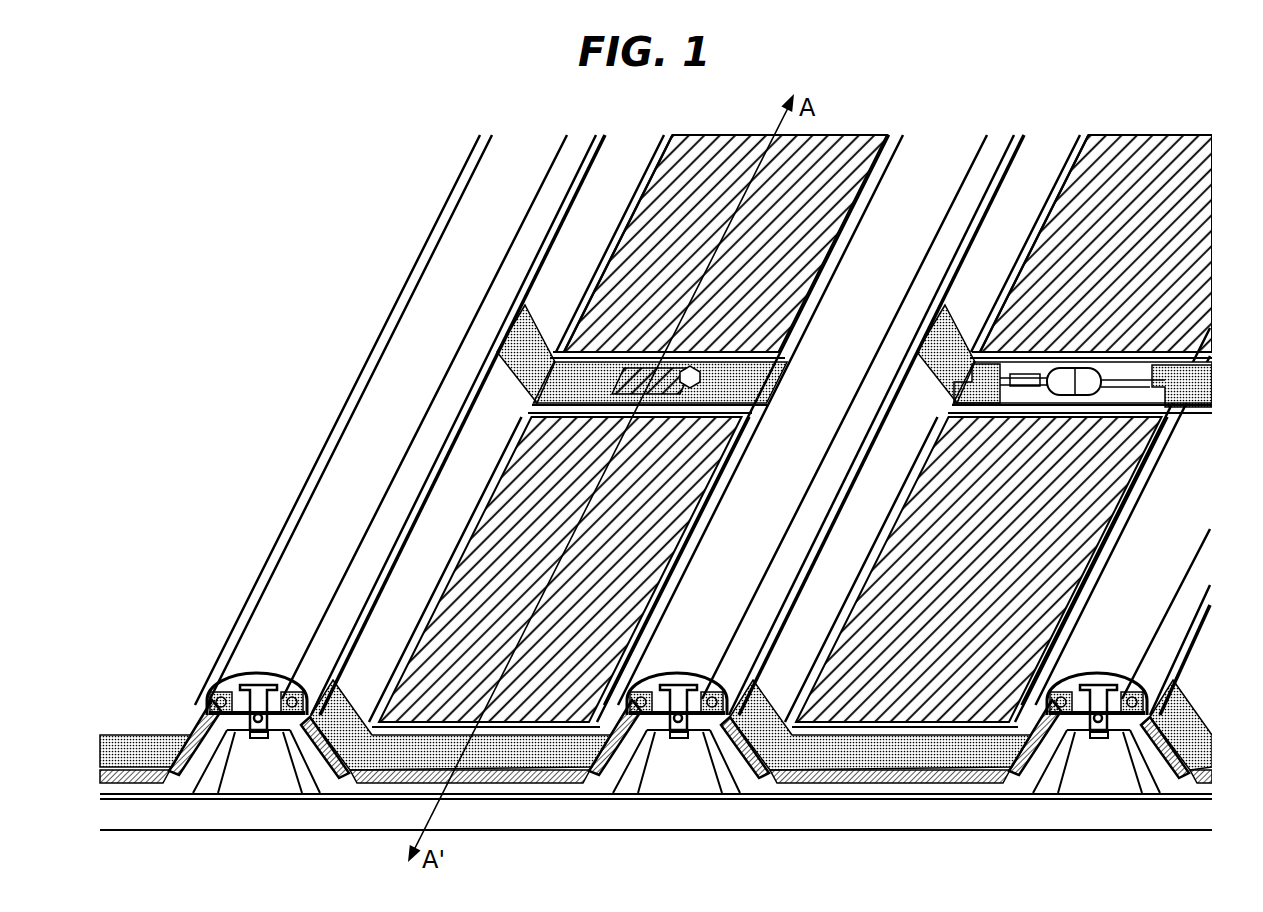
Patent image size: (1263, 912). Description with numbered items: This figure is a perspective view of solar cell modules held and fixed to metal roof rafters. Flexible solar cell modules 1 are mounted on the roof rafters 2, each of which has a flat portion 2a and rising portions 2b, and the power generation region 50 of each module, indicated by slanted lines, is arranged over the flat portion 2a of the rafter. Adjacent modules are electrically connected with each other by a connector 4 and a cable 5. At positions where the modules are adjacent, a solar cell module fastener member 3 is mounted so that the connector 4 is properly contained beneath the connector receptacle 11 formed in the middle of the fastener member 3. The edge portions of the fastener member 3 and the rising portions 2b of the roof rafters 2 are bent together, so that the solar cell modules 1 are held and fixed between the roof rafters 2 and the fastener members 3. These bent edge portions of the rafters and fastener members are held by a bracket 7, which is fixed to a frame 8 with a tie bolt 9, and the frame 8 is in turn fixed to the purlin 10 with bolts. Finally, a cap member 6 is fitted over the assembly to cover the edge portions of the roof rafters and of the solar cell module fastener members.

The solar cell module 1 is at (510, 783).
The roof rafter 2 is at (552, 787).
The flat portion 2a is at (463, 787).
The rising portion 2b is at (292, 762).
The solar cell module fastener member 3 is at (396, 770).
The connector 4 is at (1090, 388).
The cable 5 is at (1017, 380).
The cap member 6 is at (742, 622).
The bracket 7 is at (1020, 790).
The frame 8 is at (740, 803).
The tie bolt 9 is at (1087, 770).
The purlin 10 is at (633, 813).
The connector receptacle 11 is at (600, 363).
The power generation region 50 is at (527, 498).